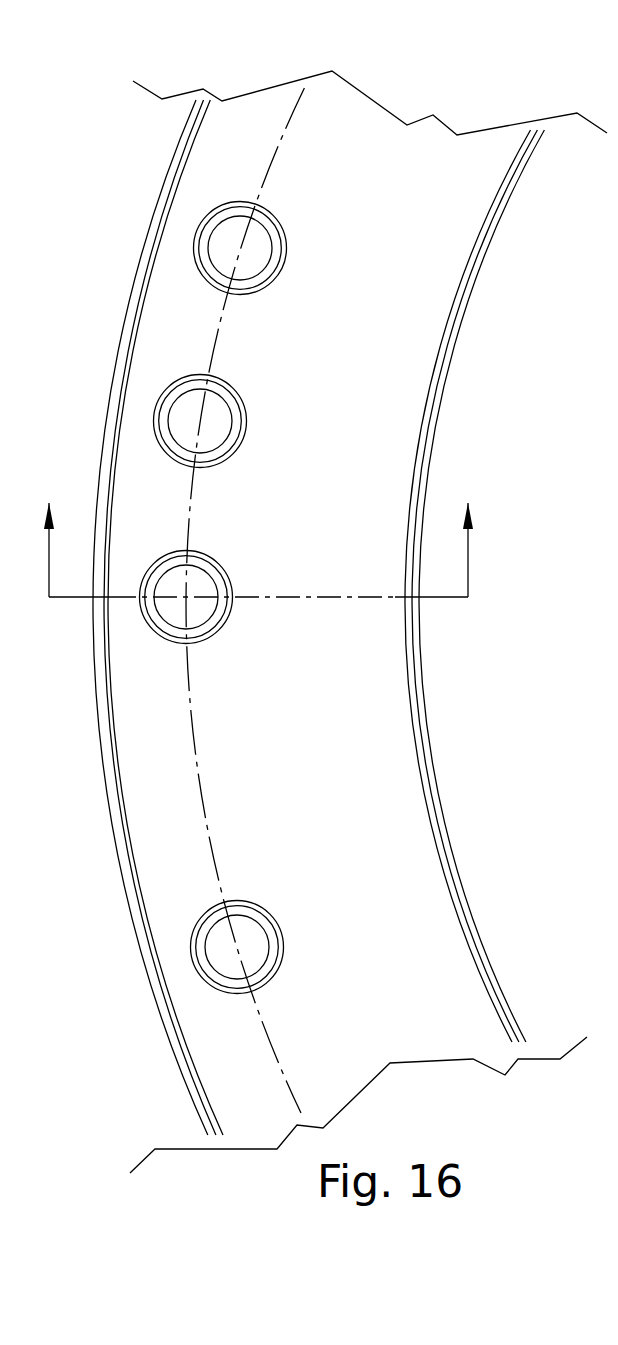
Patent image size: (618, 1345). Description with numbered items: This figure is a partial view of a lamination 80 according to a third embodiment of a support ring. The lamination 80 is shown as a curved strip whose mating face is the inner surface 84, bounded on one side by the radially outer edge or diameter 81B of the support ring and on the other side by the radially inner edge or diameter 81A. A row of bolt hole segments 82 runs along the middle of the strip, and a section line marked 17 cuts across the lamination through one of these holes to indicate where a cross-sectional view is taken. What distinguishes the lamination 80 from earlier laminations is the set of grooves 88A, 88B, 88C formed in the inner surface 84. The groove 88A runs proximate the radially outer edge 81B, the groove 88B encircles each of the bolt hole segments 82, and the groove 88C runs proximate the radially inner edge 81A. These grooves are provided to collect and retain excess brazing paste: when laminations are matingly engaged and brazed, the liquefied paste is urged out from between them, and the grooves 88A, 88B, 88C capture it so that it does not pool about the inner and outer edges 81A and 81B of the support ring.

The lamination 80 is at (63, 102).
The bolt hole segments 82 is at (230, 233).
The inner surface 84 is at (385, 723).
The groove 88A is at (172, 195).
The groove 88B is at (282, 227).
The groove 88C is at (489, 230).
The radially inner edge 81A is at (442, 411).
The radially outer edge 81B is at (120, 335).
The section line 17- 17 is at (256, 535).